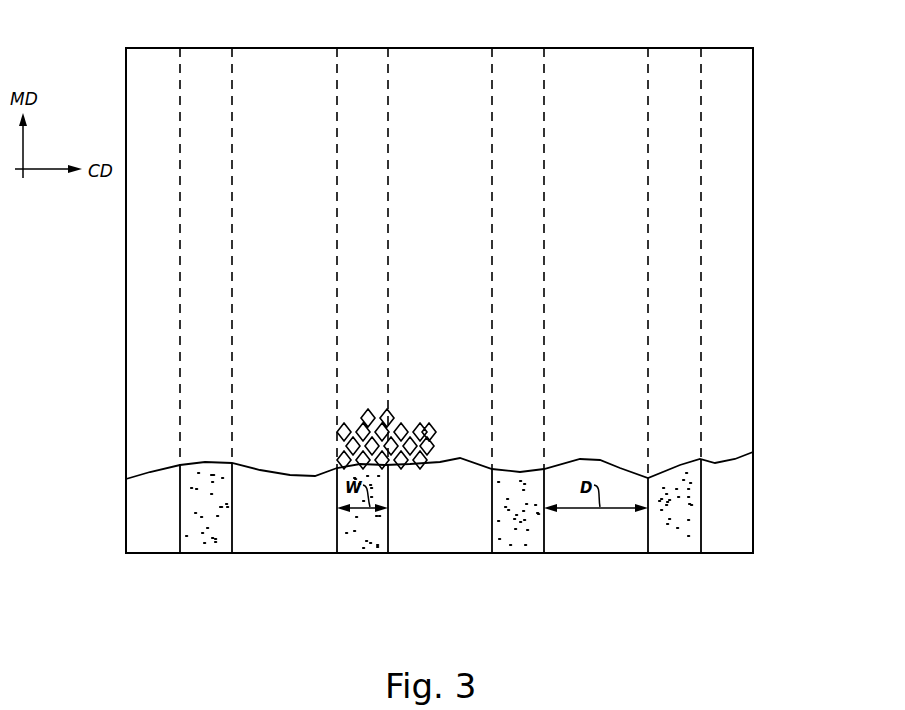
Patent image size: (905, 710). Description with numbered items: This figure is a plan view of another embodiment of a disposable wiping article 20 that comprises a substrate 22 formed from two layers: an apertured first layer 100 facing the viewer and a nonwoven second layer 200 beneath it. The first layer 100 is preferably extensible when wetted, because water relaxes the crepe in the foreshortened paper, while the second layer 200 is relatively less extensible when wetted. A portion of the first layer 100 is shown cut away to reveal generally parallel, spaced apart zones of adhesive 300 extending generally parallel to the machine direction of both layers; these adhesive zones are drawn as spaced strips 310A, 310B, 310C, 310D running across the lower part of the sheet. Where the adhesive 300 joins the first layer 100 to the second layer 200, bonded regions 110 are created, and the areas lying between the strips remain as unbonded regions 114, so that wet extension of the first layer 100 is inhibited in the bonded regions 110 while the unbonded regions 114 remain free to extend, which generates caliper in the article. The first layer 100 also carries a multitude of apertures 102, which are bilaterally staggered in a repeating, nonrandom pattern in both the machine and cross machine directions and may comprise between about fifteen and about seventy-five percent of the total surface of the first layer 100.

The disposable wiping article 20 is at (780, 100).
The substrate 22 is at (762, 196).
The first layer 100 is at (740, 431).
The apertures 102 is at (370, 411).
The bonded regions 110 is at (232, 40).
The unbonded regions 114 is at (180, 40).
The second layer 200 is at (690, 509).
The adhesive 300 is at (525, 541).
The first strip 310A is at (190, 541).
The second strip 310B is at (347, 541).
The third strip 310C is at (505, 541).
The fourth strip 310D is at (655, 541).